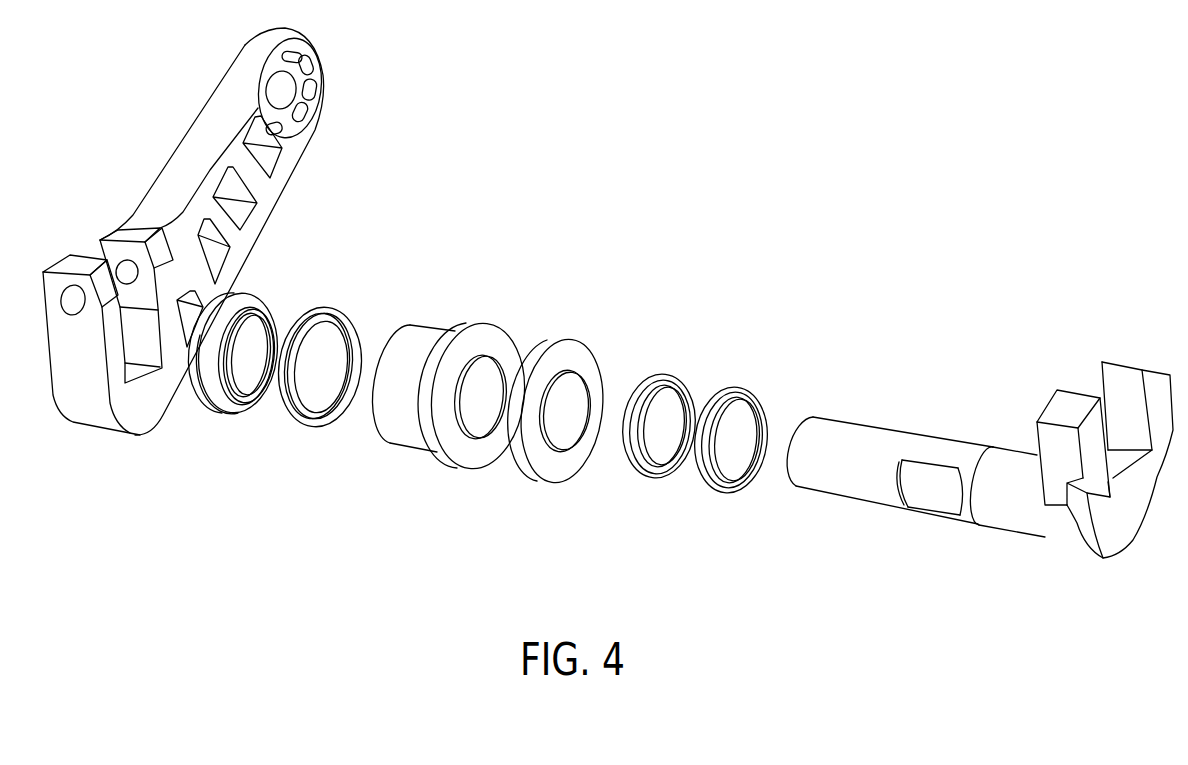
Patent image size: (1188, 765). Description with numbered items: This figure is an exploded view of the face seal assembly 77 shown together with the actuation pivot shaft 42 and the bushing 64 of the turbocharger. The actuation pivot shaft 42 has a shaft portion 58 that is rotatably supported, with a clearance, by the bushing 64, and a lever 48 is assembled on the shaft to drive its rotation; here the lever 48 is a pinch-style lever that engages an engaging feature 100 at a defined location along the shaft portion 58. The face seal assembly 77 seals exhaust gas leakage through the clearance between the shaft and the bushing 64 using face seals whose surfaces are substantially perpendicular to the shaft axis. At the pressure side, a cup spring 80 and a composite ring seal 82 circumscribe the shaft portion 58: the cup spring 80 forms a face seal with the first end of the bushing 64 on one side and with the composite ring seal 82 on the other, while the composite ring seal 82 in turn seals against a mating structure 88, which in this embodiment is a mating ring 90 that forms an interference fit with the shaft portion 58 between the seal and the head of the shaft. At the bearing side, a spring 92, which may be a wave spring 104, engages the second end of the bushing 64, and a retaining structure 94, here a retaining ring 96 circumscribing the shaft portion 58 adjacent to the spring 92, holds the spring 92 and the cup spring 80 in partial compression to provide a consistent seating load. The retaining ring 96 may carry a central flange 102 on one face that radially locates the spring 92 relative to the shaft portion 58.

The actuation pivot shaft 42 is at (980, 460).
The lever 48 is at (183, 153).
The shaft portion 58 is at (836, 490).
The bushing 64 is at (432, 338).
The face seal assembly 77 is at (651, 322).
The cup spring 80 is at (577, 355).
The composite ring seal 82 is at (643, 475).
The mating structure 88 is at (714, 488).
The mating ring 90 is at (735, 487).
The spring 92 is at (303, 423).
The retaining structure 94 is at (257, 300).
The retaining ring 96 is at (230, 410).
The engaging feature 100 is at (933, 492).
The central flange 102 is at (268, 318).
The wave spring 104 is at (340, 318).